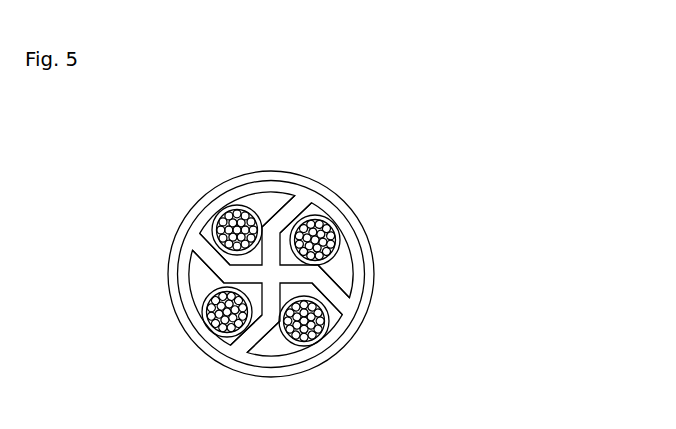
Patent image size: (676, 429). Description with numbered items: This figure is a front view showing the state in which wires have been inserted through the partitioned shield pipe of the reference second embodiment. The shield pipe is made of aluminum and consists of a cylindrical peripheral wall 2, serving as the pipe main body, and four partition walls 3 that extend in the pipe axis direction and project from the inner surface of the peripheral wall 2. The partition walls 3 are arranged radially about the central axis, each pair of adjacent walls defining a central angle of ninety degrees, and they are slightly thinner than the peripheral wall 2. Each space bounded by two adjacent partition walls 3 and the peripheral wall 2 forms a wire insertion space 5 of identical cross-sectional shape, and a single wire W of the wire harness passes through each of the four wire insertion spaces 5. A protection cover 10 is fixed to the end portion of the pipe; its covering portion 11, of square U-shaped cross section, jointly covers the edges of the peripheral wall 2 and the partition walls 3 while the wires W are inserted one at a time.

The protection cover 10 is at (291, 260).
The covering portion 11 is at (365, 308).
The peripheral wall 2 is at (351, 238).
The partition wall 3 is at (284, 220).
The wire insertion space 5 is at (240, 204).
The wire W is at (217, 215).